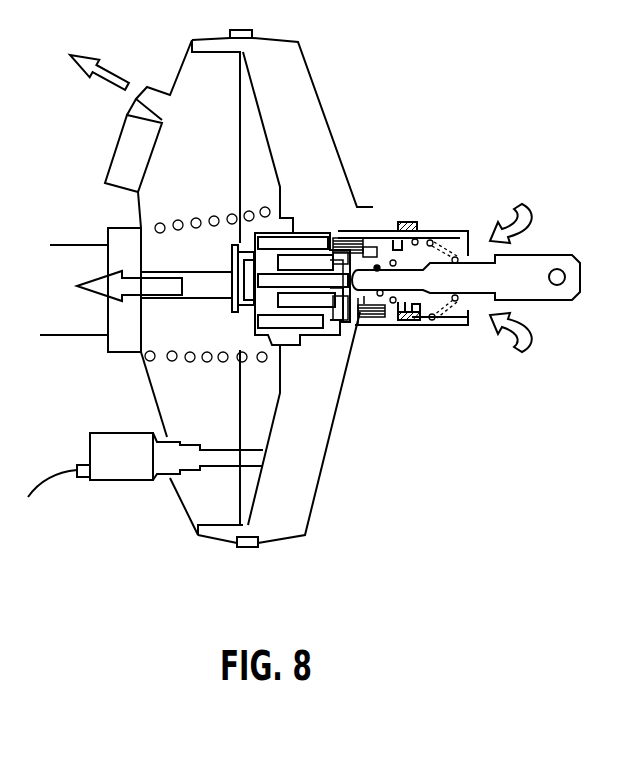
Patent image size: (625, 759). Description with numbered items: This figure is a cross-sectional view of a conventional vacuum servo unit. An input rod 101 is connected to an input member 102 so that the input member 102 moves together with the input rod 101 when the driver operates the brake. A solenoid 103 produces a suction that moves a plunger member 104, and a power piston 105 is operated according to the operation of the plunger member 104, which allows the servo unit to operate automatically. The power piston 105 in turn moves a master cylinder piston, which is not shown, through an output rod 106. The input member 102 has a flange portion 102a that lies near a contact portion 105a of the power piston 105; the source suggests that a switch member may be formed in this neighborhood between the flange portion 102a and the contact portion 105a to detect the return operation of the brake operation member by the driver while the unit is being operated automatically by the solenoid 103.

The input rod 101 is at (476, 284).
The input member 102 is at (351, 300).
The flange portion 102a is at (345, 290).
The solenoid 103 is at (276, 238).
The plunger member 104 is at (335, 207).
The power piston 105 is at (308, 262).
The contact portion 105a is at (364, 300).
The output rod 106 is at (198, 286).